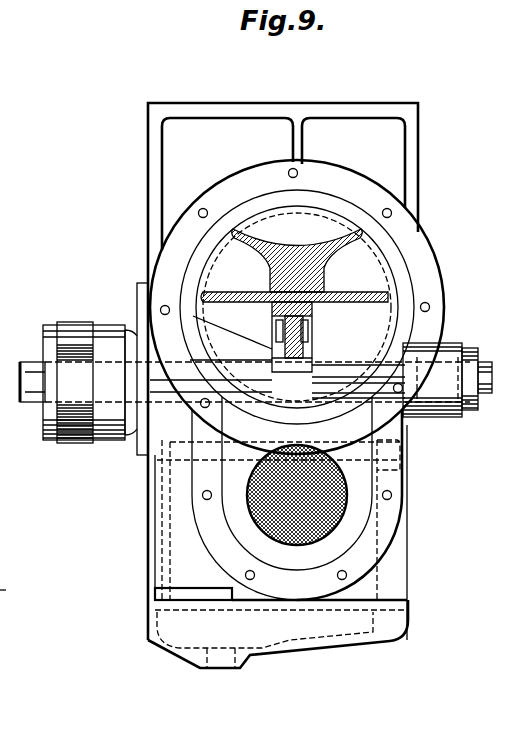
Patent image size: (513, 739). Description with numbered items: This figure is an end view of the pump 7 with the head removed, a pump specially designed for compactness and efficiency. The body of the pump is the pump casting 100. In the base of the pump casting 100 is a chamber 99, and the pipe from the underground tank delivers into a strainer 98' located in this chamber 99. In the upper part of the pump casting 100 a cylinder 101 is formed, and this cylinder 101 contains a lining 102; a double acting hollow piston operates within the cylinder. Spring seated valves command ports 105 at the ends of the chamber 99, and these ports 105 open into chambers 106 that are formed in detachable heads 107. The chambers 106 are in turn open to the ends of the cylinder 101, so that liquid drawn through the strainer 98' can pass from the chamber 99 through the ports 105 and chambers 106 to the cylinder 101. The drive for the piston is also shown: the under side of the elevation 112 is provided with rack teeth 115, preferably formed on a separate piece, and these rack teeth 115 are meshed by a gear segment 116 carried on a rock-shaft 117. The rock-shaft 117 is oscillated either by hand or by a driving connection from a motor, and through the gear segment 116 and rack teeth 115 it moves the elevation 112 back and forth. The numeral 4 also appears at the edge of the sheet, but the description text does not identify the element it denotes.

The pump 7 is at (427, 237).
The cylinder 101 is at (395, 275).
The lining 102 is at (190, 268).
The strainer 98' is at (294, 498).
The ports 105 is at (304, 558).
The rack teeth 115 is at (278, 312).
The elevation 112 is at (356, 300).
The gear segment 116 is at (308, 325).
The rock-shaft 117 is at (292, 368).
The detachable heads 107 is at (71, 380).
The chambers 106 is at (2, 472).
The pump casting 100 is at (193, 472).
The chamber 99 is at (172, 516).
The frame 4 is at (3, 586).